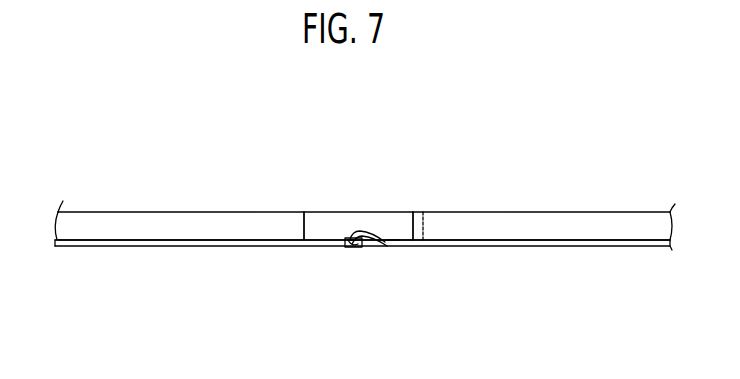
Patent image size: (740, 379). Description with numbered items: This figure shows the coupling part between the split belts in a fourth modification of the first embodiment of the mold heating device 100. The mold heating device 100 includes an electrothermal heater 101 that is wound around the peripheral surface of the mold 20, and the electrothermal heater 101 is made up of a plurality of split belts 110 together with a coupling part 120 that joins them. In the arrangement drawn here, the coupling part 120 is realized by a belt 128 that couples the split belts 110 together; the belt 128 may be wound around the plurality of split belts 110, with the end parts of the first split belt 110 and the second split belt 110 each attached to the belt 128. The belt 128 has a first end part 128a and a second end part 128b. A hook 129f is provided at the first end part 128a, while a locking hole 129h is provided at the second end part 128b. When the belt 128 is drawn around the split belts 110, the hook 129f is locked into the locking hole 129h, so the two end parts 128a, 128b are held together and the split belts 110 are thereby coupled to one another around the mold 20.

The split belt 110 is at (120, 212).
The belt 128 is at (264, 247).
The second end part 128b is at (335, 240).
The first end part 128a is at (392, 250).
The locking hole 129h is at (353, 240).
The hook 129f is at (345, 248).
The coupling part 120 is at (365, 250).
The mold 20 is at (413, 247).
The mold heating device 100 is at (110, 256).
The electrothermal heater 101 is at (190, 249).